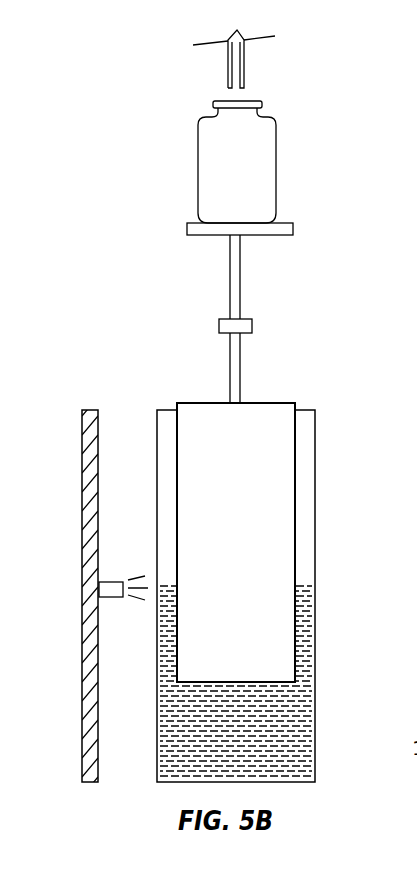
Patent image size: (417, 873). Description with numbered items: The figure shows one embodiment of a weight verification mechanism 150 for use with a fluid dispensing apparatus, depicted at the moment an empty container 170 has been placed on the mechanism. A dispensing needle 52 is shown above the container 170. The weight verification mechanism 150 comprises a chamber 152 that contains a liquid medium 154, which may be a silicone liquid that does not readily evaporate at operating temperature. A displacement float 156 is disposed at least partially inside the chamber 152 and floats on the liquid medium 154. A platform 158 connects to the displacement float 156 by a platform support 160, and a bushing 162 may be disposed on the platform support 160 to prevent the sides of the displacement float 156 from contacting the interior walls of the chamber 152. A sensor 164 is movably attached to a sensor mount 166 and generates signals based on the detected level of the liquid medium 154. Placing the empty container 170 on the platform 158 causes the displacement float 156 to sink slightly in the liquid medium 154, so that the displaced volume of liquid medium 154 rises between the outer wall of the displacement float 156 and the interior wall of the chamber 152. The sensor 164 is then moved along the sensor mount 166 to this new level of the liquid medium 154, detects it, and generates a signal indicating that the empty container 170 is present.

The weight verification mechanism 150 is at (160, 109).
The needle 52 is at (245, 62).
The container 170 is at (280, 150).
The platform 158 is at (283, 228).
The platform support 160 is at (230, 285).
The bushing 162 is at (245, 328).
The chamber 152 is at (302, 482).
The displacement float 156 is at (267, 585).
The liquid medium 154 is at (282, 740).
The sensor 164 is at (110, 583).
The sensor mount 166 is at (93, 715).